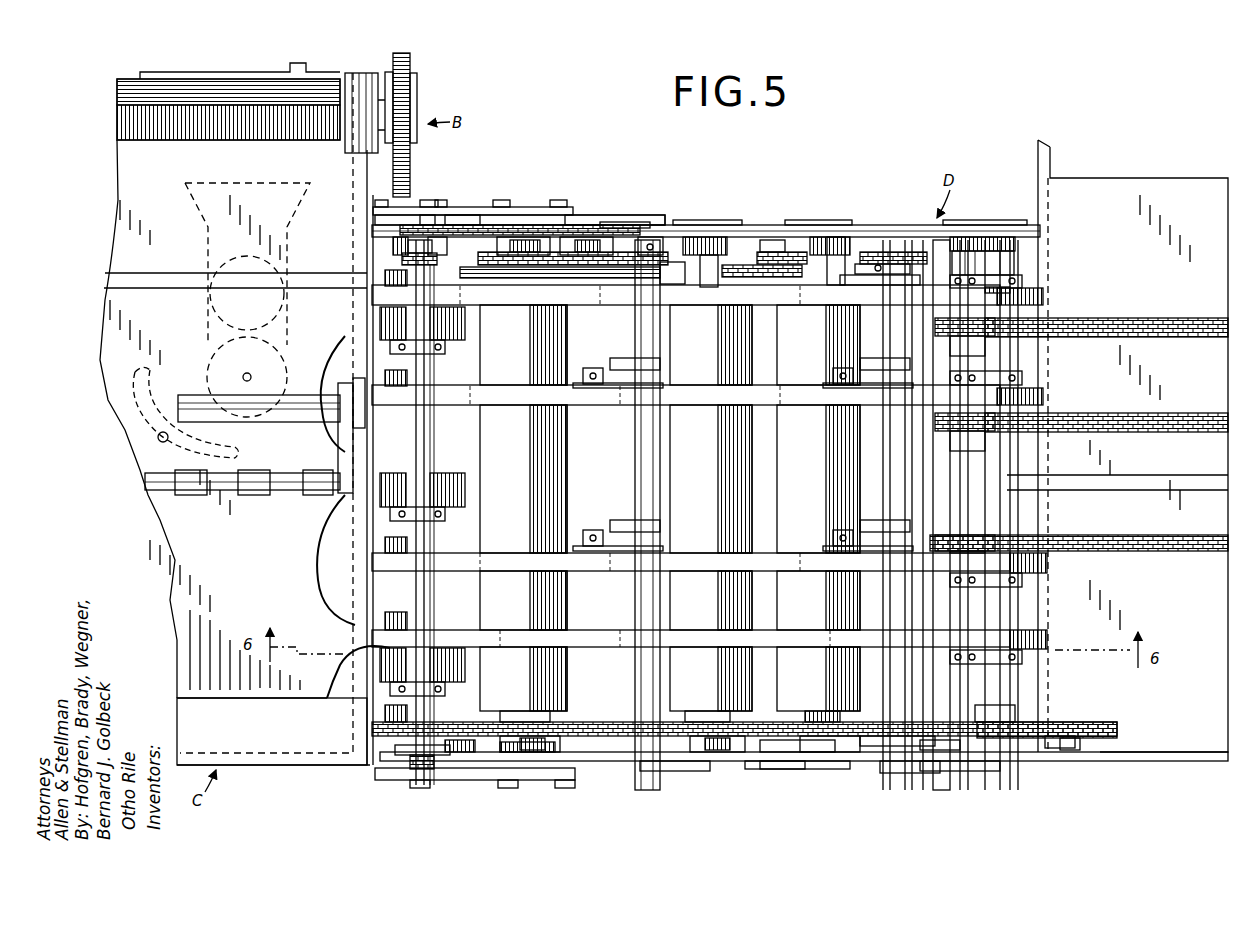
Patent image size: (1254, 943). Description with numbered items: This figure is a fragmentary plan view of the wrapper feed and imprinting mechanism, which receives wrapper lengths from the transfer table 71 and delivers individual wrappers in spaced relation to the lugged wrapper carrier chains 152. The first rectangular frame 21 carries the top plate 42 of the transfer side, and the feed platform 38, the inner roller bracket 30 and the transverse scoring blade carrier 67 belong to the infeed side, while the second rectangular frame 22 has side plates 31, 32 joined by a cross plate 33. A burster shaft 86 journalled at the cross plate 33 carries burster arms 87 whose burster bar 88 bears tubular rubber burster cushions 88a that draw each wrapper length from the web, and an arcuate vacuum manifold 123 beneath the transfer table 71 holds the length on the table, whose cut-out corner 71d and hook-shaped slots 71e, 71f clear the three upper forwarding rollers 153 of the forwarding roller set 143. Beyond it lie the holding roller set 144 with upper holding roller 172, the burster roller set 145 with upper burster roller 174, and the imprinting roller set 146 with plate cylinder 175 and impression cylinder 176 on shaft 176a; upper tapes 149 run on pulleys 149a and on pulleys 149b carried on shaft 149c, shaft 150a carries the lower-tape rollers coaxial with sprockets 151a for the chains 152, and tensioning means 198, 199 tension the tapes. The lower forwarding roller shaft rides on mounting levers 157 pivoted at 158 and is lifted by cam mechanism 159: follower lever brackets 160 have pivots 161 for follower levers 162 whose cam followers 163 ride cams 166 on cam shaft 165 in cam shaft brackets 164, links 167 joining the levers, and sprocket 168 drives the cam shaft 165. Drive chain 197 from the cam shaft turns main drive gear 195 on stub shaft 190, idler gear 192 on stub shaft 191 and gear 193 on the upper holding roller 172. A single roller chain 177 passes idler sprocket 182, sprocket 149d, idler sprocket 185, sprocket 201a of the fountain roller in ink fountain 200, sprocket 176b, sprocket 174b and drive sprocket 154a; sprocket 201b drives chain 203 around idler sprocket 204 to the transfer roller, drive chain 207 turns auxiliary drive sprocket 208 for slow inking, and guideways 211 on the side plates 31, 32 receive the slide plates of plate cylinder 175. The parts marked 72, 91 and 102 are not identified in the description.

The rectangular frame 21 is at (290, 772).
The rectangular frame 22 is at (667, 220).
The inner roller bracket 30 is at (367, 148).
The side plate 31 is at (660, 766).
The side plate 32 is at (972, 232).
The cross plate 33 is at (367, 248).
The feed platform 38 is at (124, 205).
The top plate 42 is at (270, 752).
The transverse scoring blade carrier 67 is at (122, 122).
The transfer table 71 is at (243, 688).
The cut-out corner 71d is at (340, 670).
The hook-shaped slot 71e is at (320, 556).
The hook-shaped slot 71f is at (345, 336).
The dashed outline member 72 is at (206, 247).
The burster shaft 86 is at (200, 397).
The burster arms 87 is at (345, 455).
The burster bar 88 is at (292, 494).
The tubular rubber burster cushions 88a is at (250, 497).
The gear 91 is at (412, 72).
The gear 102 is at (405, 103).
The arcuate vacuum manifold 123 is at (138, 378).
The forwarding roller set 143 is at (452, 350).
The holding roller set 144 is at (570, 490).
The burster roller set 145 is at (663, 441).
The imprinting roller set 146 is at (775, 437).
The upper tapes 149 is at (604, 302).
The pulleys 149a is at (390, 282).
The pulleys 149b is at (1022, 282).
The shaft 149c is at (995, 607).
The sprocket 149d is at (1005, 724).
The shaft 150a is at (1000, 262).
The sprockets 151a is at (978, 336).
The lugged wrapper carrier chains 152 is at (1192, 338).
The upper forwarding rollers 153 is at (390, 347).
The drive sprocket 154a is at (385, 735).
The mounting levers 157 is at (373, 222).
The pivots 158 is at (373, 210).
The cam mechanism 159 is at (538, 206).
The follower lever brackets 160 is at (612, 216).
The pivots 161 is at (560, 212).
The follower levers 162 is at (472, 228).
The cam follower 163 is at (455, 214).
The cam shaft brackets 164 is at (393, 240).
The cam shaft 165 is at (420, 453).
The cams 166 is at (410, 210).
The links 167 is at (547, 213).
The sprocket 168 is at (408, 258).
The upper holding roller 172 is at (518, 446).
The upper burster roller 174 is at (705, 466).
The sprocket 174b is at (695, 722).
The plate cylinder 175 is at (875, 412).
The impression cylinder 176 is at (815, 471).
The shaft 176a is at (815, 722).
The sprocket 176b is at (800, 760).
The roller chain 177 is at (600, 735).
The idler sprocket 182 is at (1117, 735).
The idler sprocket 185 is at (940, 752).
The stub shaft 190 is at (625, 225).
The stub shaft 191 is at (560, 286).
The intermediate idler gear 192 is at (533, 268).
The gear 193 is at (435, 263).
The main drive gear 195 is at (655, 272).
The drive chain 197 is at (625, 228).
The tensioning means 198 is at (565, 368).
The tensioning means 199 is at (816, 288).
The ink fountain 200 is at (945, 764).
The sprocket 201a is at (885, 748).
The sprocket 201b is at (895, 252).
The drive chain 203 is at (782, 240).
The idler sprocket 204 is at (770, 262).
The drive chain 207 is at (738, 263).
The auxiliary drive sprocket 208 is at (880, 285).
The guideways 211 is at (860, 240).